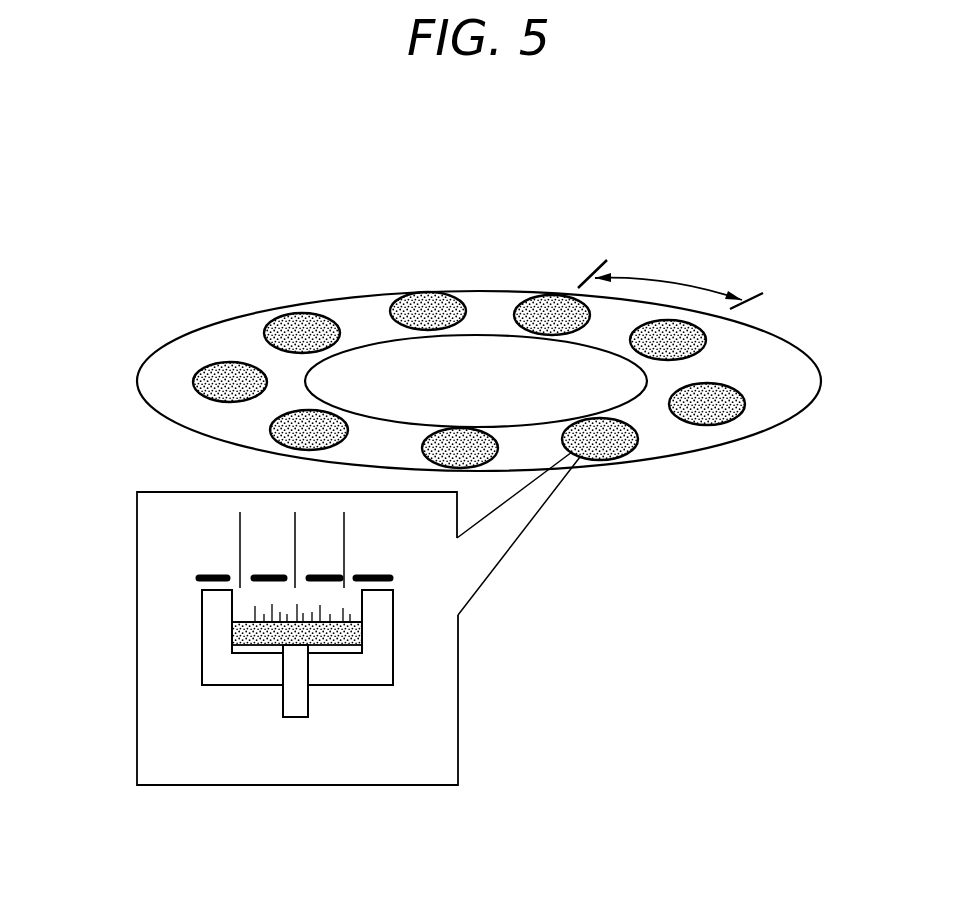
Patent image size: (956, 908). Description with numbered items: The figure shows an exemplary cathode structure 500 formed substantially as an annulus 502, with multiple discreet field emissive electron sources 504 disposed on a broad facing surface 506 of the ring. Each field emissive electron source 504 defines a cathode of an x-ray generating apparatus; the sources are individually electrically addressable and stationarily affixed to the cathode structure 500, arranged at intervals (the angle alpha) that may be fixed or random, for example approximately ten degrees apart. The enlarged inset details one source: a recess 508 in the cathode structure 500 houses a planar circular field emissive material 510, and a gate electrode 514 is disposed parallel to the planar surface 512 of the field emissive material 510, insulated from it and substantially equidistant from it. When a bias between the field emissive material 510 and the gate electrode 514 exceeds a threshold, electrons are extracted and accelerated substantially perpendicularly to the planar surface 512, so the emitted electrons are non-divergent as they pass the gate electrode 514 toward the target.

The cathode structure 500 is at (556, 236).
The annulus 502 is at (803, 387).
The field emissive electron source 504 is at (222, 372).
The broad facing surface 506 is at (148, 369).
The recess 508 is at (348, 608).
The field emissive material 510 is at (232, 633).
The planar surface 512 is at (250, 622).
The gate electrode 514 is at (207, 577).